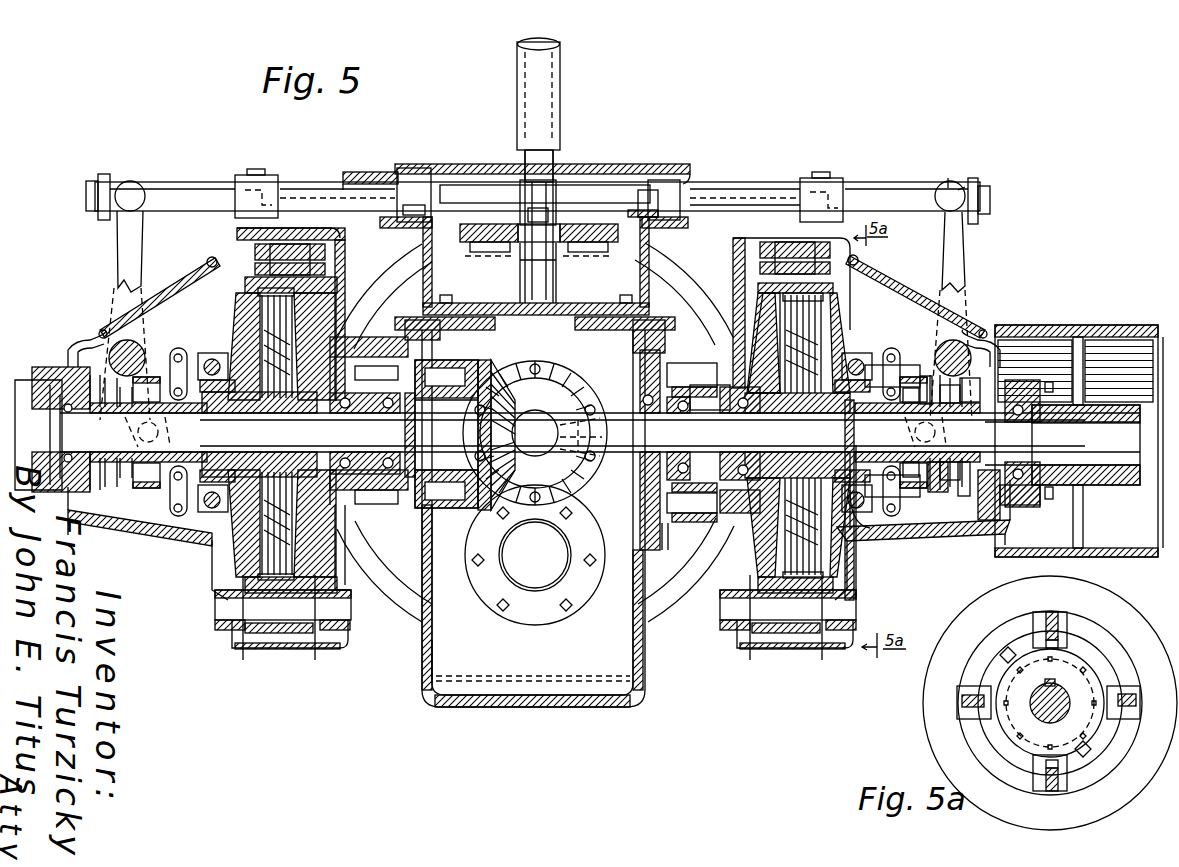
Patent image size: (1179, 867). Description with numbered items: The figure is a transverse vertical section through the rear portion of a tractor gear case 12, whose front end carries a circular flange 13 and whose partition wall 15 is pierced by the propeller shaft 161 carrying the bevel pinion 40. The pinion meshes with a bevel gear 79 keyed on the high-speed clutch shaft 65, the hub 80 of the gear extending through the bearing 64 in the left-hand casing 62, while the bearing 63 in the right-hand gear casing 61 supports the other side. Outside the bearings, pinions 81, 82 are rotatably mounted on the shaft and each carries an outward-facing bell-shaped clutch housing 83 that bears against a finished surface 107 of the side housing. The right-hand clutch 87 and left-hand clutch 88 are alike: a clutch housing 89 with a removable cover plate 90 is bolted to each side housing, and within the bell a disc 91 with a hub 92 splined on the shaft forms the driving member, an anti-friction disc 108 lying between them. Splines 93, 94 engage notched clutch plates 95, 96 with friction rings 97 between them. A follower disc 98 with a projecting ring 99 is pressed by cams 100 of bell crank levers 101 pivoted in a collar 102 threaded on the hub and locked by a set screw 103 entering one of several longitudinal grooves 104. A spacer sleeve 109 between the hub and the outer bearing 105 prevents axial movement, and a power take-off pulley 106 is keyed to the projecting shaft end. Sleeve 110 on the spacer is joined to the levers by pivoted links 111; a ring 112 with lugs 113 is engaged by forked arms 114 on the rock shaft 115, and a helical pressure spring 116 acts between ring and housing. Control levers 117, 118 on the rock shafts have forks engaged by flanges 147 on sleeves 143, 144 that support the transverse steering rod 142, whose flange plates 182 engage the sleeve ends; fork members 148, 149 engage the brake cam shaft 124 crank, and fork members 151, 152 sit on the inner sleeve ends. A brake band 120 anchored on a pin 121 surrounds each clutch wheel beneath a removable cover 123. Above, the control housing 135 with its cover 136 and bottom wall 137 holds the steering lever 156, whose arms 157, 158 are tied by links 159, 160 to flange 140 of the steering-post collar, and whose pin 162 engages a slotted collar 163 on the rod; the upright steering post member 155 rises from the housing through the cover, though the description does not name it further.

In FIG. 5, the gear case 12 is at (643, 657).
In FIG. 5, the circular flange 13 is at (554, 138).
In FIG. 5, the transverse partition wall 15 is at (443, 657).
In FIG. 5, the bevel pinion 40 is at (541, 369).
In FIG. 5, the right-hand gear casing 61 is at (677, 352).
In FIG. 5, the left-hand casing 62 is at (382, 352).
In FIG. 5, the bearing 63 is at (640, 486).
In FIG. 5, the bearing 64 is at (460, 358).
In FIG. 5, the high-speed clutch shaft 65 is at (607, 420).
In FIG. 5A, the high-speed clutch shaft 65 is at (1065, 696).
In FIG. 5, the bevel gear 79 is at (510, 355).
In FIG. 5, the hub 80 is at (428, 423).
In FIG. 5, the pinion 81 is at (687, 515).
In FIG. 5, the pinion 82 is at (372, 512).
In FIG. 5, the bell-shaped clutch housing 83 is at (249, 284).
In FIG. 5, the right-hand clutch 87 is at (900, 276).
In FIG. 5, the left-hand clutch 88 is at (213, 250).
In FIG. 5, the clutch housing 89 is at (137, 535).
In FIG. 5, the removable cover plate 90 is at (181, 290).
In FIG. 5, the disc 91 is at (320, 338).
In FIG. 5, the hub 92 is at (300, 405).
In FIG. 5, the splines 93 is at (858, 358).
In FIG. 5, the splines 94 is at (832, 300).
In FIG. 5, the clutch plates 95 is at (855, 324).
In FIG. 5, the clutch plates 96 is at (823, 316).
In FIG. 5, the rings of friction material 97 is at (838, 326).
In FIG. 5, the follower disc 98 is at (863, 578).
In FIG. 5A, the follower disc 98 is at (1108, 604).
In FIG. 5, the projecting ring 99 is at (860, 560).
In FIG. 5A, the projecting ring 99 is at (1127, 660).
In FIG. 5, the cams 100 is at (887, 547).
In FIG. 5, the bell crank levers 101 is at (890, 352).
In FIG. 5A, the bell crank levers 101 is at (1055, 614).
In FIG. 5, the collar 102 is at (848, 420).
In FIG. 5A, the collar 102 is at (1075, 660).
In FIG. 5A, the set screw 103 is at (1006, 654).
In FIG. 5A, the longitudinal grooves 104 is at (1028, 684).
In FIG. 5, the rotatable bearing 105 is at (1033, 507).
In FIG. 5, the power take-off pulley 106 is at (1090, 335).
In FIG. 5, the finished surface 107 is at (714, 556).
In FIG. 5, the anti-friction disc 108 is at (777, 454).
In FIG. 5, the spacer sleeve 109 is at (970, 418).
In FIG. 5, the rotatable sleeve 110 is at (905, 418).
In FIG. 5, the pivoted links 111 is at (902, 368).
In FIG. 5, the ring 112 is at (948, 494).
In FIG. 5, the lugs 113 is at (952, 424).
In FIG. 5, the forked arms 114 is at (962, 386).
In FIG. 5, the rock shaft 115 is at (960, 342).
In FIG. 5, the helical pressure spring 116 is at (968, 498).
In FIG. 5, the control lever 117 is at (958, 260).
In FIG. 5, the control lever 118 is at (117, 253).
In FIG. 5, the brake band 120 is at (772, 600).
In FIG. 5, the pin 121 is at (797, 653).
In FIG. 5, the removable cover 123 is at (742, 250).
In FIG. 5, the cam shaft 124 is at (778, 234).
In FIG. 5, the control housing 135 is at (662, 264).
In FIG. 5, the removable cover 136 is at (645, 166).
In FIG. 5, the bottom wall 137 is at (590, 306).
In FIG. 5, the flange 140 is at (507, 212).
In FIG. 5, the steering rod 142 is at (603, 195).
In FIG. 5, the sleeve 143 is at (752, 190).
In FIG. 5, the sleeve 144 is at (312, 185).
In FIG. 5, the flange 147 is at (972, 181).
In FIG. 5, the fork member 148 is at (838, 180).
In FIG. 5, the fork member 149 is at (241, 178).
In FIG. 5, the fork member 151 is at (667, 186).
In FIG. 5, the fork member 152 is at (407, 178).
In FIG. 5, the steering tube 155 is at (563, 90).
In FIG. 5, the steering lever 156 is at (533, 246).
In FIG. 5, the arm 157 is at (592, 242).
In FIG. 5, the arm 158 is at (468, 242).
In FIG. 5, the link 159 is at (618, 226).
In FIG. 5, the link 160 is at (466, 238).
In FIG. 5, the propeller shaft 161 is at (568, 382).
In FIG. 5, the pin 162 is at (540, 208).
In FIG. 5, the slotted collar 163 is at (553, 200).
In FIG. 5, the flange plate 182 is at (985, 194).